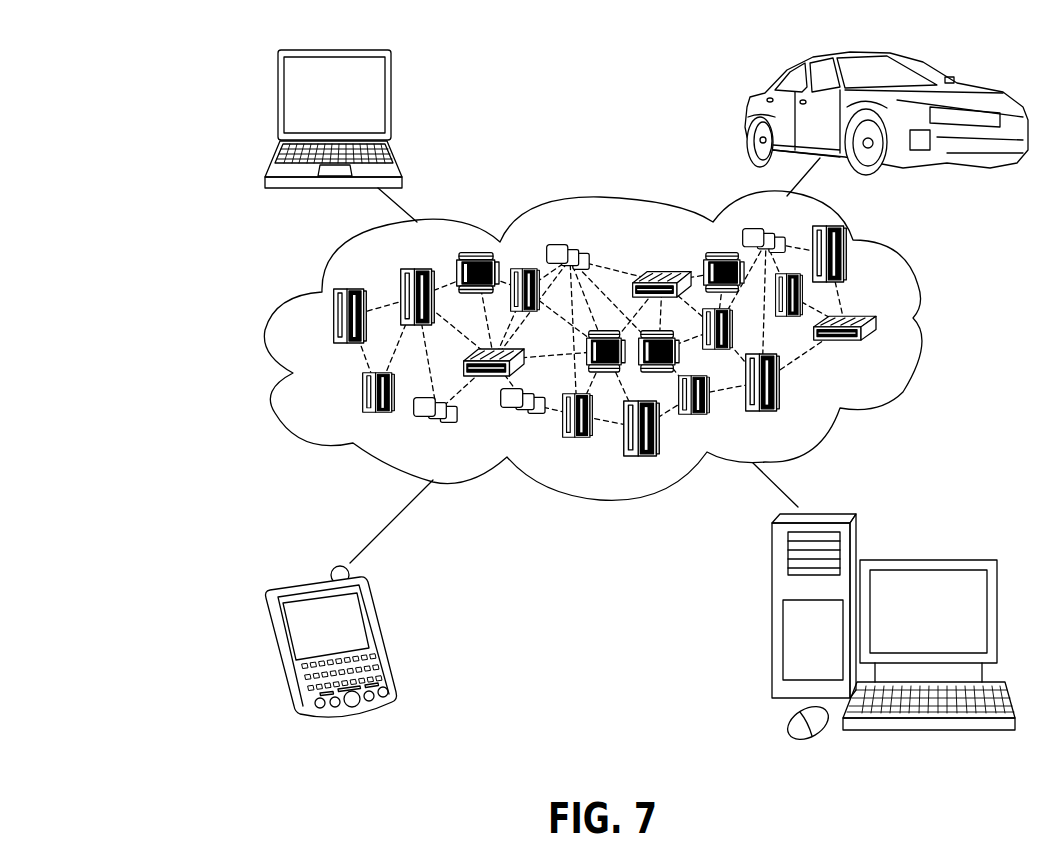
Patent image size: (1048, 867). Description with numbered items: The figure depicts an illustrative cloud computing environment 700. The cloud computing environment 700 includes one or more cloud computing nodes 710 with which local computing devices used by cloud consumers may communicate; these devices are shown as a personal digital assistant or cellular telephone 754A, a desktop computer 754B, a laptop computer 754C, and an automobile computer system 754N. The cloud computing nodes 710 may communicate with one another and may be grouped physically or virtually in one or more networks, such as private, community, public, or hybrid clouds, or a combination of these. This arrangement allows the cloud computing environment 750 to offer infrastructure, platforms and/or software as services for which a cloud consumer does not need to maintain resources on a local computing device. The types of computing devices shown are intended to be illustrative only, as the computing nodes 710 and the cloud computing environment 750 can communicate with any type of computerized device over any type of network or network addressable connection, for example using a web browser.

The cloud computing environment 700 is at (142, 78).
The cloud computing nodes 710 is at (884, 350).
The cloud computing environment 750 is at (925, 323).
The personal digital assistant (PDA) or cellular telephone 754A is at (382, 638).
The desktop computer 754B is at (925, 558).
The laptop computer 754C is at (392, 103).
The automobile computer system 754N is at (748, 114).